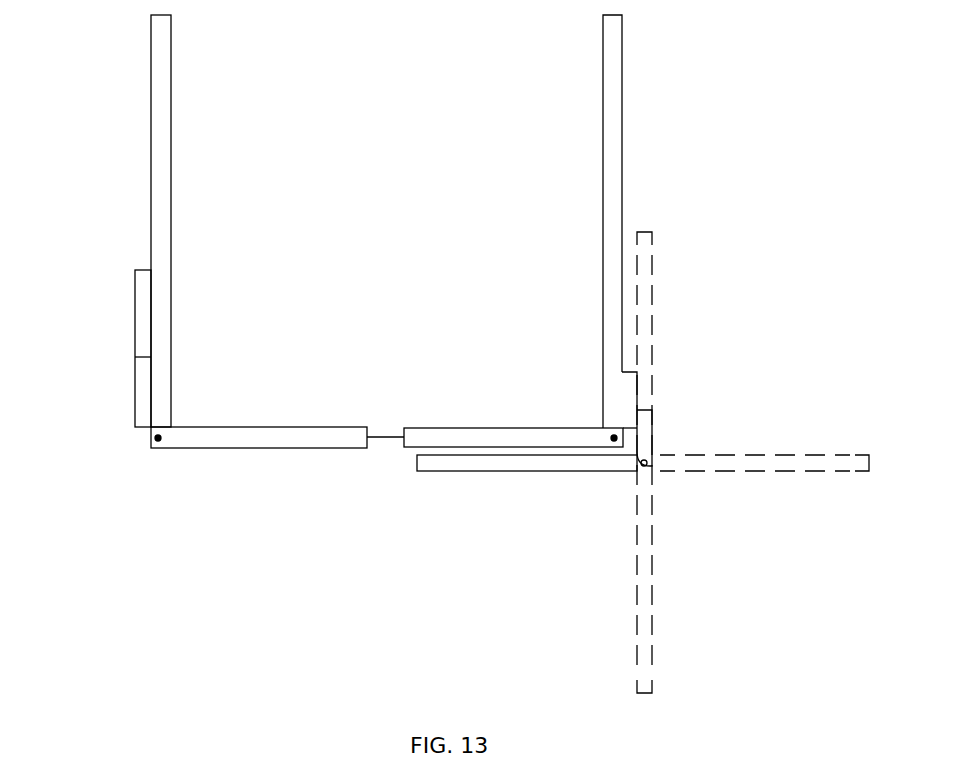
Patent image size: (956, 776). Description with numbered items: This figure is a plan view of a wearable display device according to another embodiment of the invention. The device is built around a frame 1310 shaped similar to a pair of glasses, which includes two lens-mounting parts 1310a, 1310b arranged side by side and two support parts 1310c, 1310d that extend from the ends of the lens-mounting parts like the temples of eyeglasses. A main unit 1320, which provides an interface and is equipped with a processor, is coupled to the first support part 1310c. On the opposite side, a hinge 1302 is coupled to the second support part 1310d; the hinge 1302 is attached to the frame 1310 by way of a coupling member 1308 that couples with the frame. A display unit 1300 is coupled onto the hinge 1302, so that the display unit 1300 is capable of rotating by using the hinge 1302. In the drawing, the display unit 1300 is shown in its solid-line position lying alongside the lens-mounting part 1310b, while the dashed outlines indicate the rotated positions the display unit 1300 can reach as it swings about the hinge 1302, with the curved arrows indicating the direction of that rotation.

The display unit 1300 is at (596, 546).
The hinge 1302 is at (650, 464).
The coupling member 1308 is at (650, 433).
The frame 1310 is at (445, 231).
The lens-mounting part 1310a is at (232, 427).
The lens-mounting part 1310b is at (498, 430).
The first support part 1310c is at (165, 110).
The second support part 1310d is at (620, 197).
The main unit 1320 is at (136, 305).